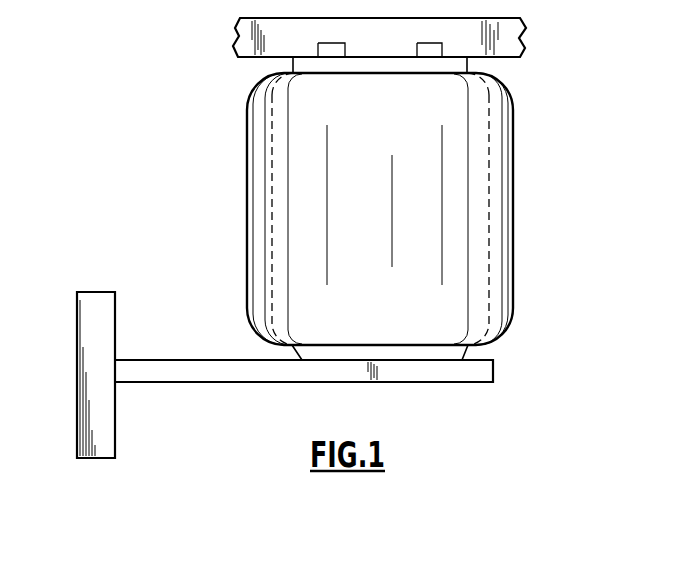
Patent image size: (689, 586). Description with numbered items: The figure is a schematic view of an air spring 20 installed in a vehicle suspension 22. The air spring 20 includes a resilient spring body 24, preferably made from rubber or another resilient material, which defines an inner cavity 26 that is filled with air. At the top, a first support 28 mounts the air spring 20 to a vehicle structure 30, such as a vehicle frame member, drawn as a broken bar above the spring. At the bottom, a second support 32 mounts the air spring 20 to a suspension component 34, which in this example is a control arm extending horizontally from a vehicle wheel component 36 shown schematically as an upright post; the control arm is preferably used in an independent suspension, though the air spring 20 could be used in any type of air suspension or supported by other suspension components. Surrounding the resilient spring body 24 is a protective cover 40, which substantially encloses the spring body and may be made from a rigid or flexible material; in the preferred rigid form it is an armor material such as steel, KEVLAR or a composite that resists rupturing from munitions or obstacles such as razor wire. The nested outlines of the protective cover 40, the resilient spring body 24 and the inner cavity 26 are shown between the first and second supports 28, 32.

The air spring 20 is at (398, 209).
The vehicle suspension 22 is at (287, 350).
The resilient spring body 24 is at (490, 277).
The inner cavity 26 is at (460, 230).
The first support 28 is at (316, 66).
The vehicle structure 30 is at (510, 35).
The second support 32 is at (303, 355).
The suspension component 34 is at (207, 372).
The vehicle wheel component 36 is at (92, 305).
The protective cover 40 is at (247, 243).